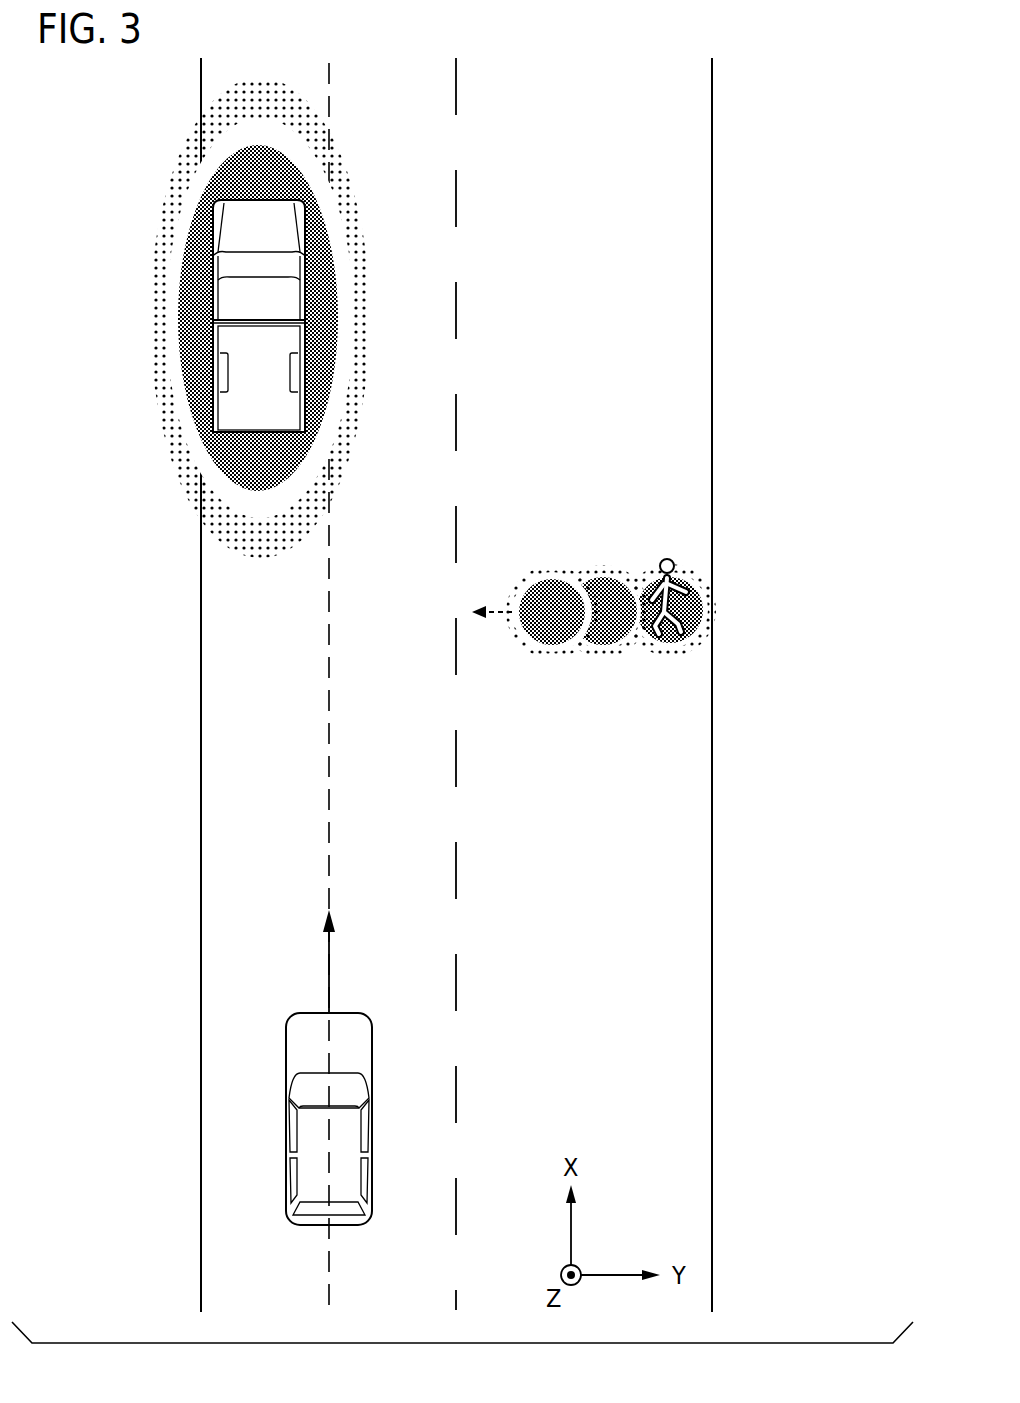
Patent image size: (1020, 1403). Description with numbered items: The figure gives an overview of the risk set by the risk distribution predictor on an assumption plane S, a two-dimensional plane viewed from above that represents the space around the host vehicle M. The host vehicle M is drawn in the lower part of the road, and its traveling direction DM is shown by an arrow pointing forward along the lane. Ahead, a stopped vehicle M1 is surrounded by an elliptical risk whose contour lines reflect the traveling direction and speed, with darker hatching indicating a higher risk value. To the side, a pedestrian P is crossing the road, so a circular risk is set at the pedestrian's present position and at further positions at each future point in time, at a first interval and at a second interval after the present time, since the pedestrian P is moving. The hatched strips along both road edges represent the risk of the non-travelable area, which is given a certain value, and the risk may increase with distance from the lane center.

The assumption plane S is at (594, 281).
The stopped vehicle M1 is at (307, 399).
The pedestrian P is at (666, 558).
The traveling direction of host vehicle DM is at (331, 962).
The host vehicle M is at (372, 1118).